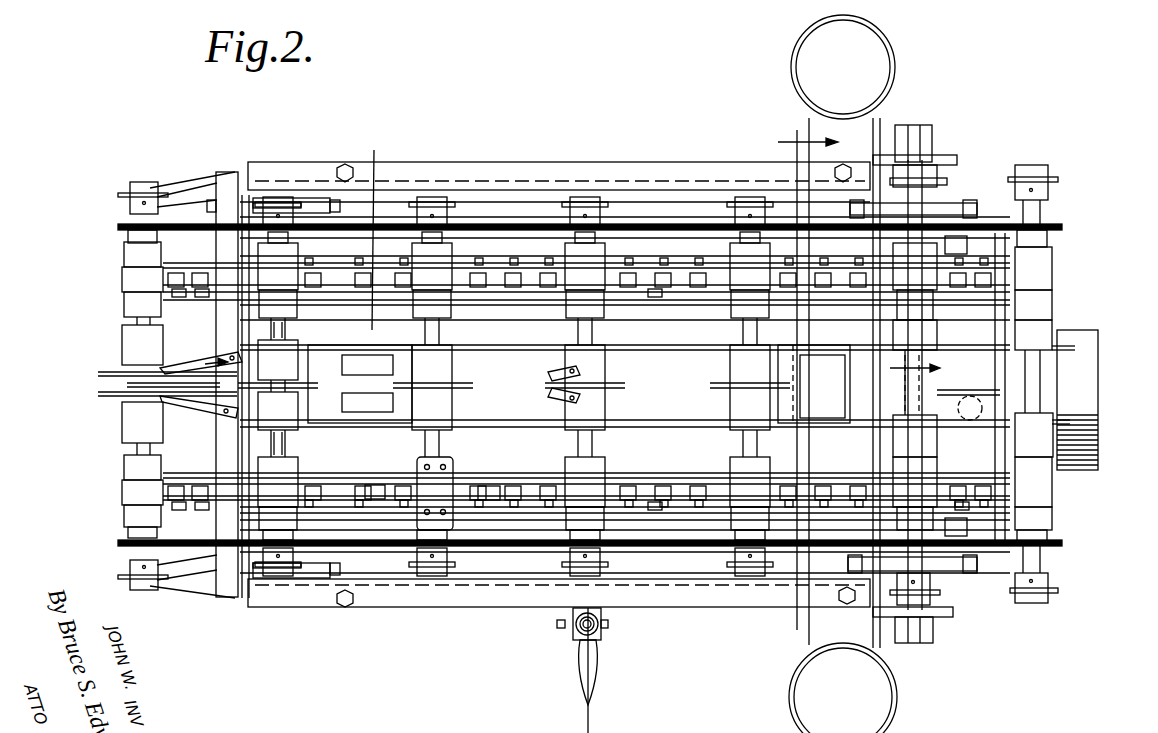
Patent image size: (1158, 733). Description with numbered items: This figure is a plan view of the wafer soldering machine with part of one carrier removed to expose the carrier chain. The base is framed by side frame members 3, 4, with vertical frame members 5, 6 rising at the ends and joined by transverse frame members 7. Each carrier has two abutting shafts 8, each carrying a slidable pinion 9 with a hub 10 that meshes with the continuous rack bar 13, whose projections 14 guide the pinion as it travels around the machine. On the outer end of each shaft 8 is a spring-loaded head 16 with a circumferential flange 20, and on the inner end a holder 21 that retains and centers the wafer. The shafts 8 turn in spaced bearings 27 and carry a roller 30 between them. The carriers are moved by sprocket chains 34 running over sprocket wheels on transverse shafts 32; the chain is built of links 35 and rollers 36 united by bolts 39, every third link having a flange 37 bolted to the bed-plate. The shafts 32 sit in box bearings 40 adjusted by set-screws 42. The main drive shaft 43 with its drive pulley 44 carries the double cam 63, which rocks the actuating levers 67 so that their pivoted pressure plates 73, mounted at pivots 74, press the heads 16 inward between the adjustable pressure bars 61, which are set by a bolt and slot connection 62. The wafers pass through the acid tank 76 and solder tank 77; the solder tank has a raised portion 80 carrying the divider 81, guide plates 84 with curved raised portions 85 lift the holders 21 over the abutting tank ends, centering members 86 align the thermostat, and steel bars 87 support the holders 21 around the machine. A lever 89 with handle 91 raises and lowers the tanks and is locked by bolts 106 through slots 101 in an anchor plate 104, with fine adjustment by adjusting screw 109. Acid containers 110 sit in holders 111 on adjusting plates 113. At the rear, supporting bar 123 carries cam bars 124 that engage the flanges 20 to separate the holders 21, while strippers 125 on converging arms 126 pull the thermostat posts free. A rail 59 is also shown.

The side frame member 3 is at (693, 431).
The side frame member 4 is at (909, 271).
The vertical frame member 5 is at (302, 207).
The vertical frame member 6 is at (960, 385).
The transverse frame member 7 is at (945, 392).
The shaft 8 is at (137, 321).
The pinion 9 is at (118, 228).
The hub 10 is at (128, 238).
The rack bar 13 is at (195, 185).
The projection 14 is at (545, 236).
The head 16 is at (130, 200).
The circumferential flange 20 is at (120, 193).
The holder 21 is at (122, 343).
The bearing 27 is at (200, 282).
The roller 30 is at (122, 268).
The shaft 32 is at (286, 326).
The sprocket chain 34 is at (180, 297).
The link 35 is at (375, 485).
The roller 36 is at (488, 500).
The flange 37 is at (450, 460).
The bolt 39 is at (358, 500).
The box bearing 40 is at (318, 198).
The set-screw 42 is at (335, 200).
The main drive shaft 43 is at (1098, 398).
The drive pulley 44 is at (1098, 372).
The rail 59 is at (310, 256).
The pressure bar 61 is at (560, 175).
The bolt and slot connection 62 is at (346, 164).
The double cam 63 is at (970, 407).
The actuating lever 67 is at (912, 125).
The pressure plate 73 is at (940, 155).
The pivotal mounting 74 is at (930, 165).
The acid tank 76 is at (630, 430).
The solder tank 77 is at (520, 345).
The raised portion 80 is at (360, 384).
The divider 81 is at (205, 425).
The guide plate 84 is at (500, 350).
The curved raised portion 85 is at (585, 372).
The centering member 86 is at (548, 398).
The steel bar 87 is at (1102, 435).
The lever 89 is at (600, 640).
The handle 91 is at (578, 689).
The slot 101 is at (601, 630).
The anchor plate 104 is at (580, 632).
The bolt 106 is at (557, 626).
The adjusting screw 109 is at (596, 665).
The container 110 is at (843, 376).
The holder 111 is at (798, 58).
The adjusting plate 113 is at (809, 122).
The supporting bar 123 is at (227, 172).
The cam bar 124 is at (190, 190).
The stripper 125 is at (98, 394).
The converging arm 126 is at (240, 360).